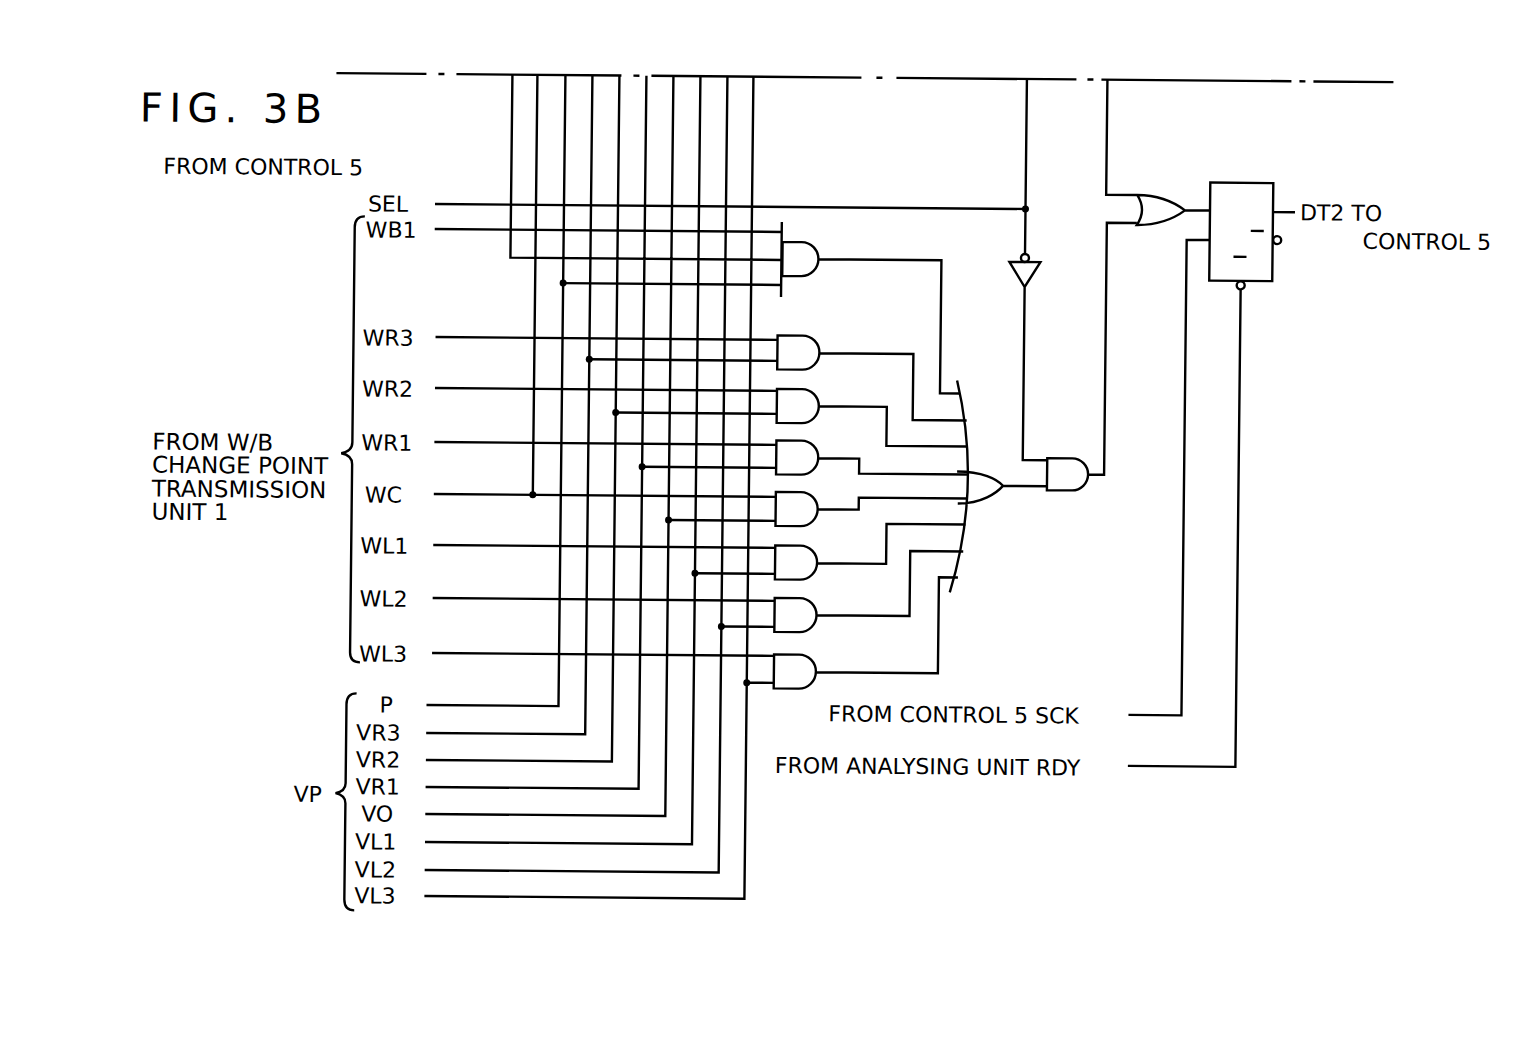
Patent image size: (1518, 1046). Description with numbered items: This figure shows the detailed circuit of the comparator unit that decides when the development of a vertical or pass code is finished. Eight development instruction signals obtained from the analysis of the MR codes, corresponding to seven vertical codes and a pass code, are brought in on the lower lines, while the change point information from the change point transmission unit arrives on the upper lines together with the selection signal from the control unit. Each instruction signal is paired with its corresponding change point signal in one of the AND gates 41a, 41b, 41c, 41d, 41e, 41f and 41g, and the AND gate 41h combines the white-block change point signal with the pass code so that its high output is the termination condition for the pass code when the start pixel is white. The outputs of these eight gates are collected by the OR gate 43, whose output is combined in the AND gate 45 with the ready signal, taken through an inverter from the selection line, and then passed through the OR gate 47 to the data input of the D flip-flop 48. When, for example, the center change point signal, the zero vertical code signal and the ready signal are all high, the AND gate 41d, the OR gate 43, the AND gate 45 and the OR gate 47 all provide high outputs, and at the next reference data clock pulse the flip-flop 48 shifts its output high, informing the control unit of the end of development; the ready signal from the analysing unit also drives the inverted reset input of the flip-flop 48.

The AND gate 41a is at (815, 343).
The AND gate 41b is at (810, 397).
The AND gate 41c is at (809, 451).
The AND gate 41d is at (809, 504).
The AND gate 41e is at (809, 558).
The AND gate 41f is at (809, 610).
The AND gate 41g is at (809, 668).
The AND gate 41h is at (813, 252).
The OR gate 43 is at (988, 492).
The AND gate 45 is at (1073, 478).
The OR gate 47 is at (1155, 189).
The D flip-flop 48 is at (1266, 187).